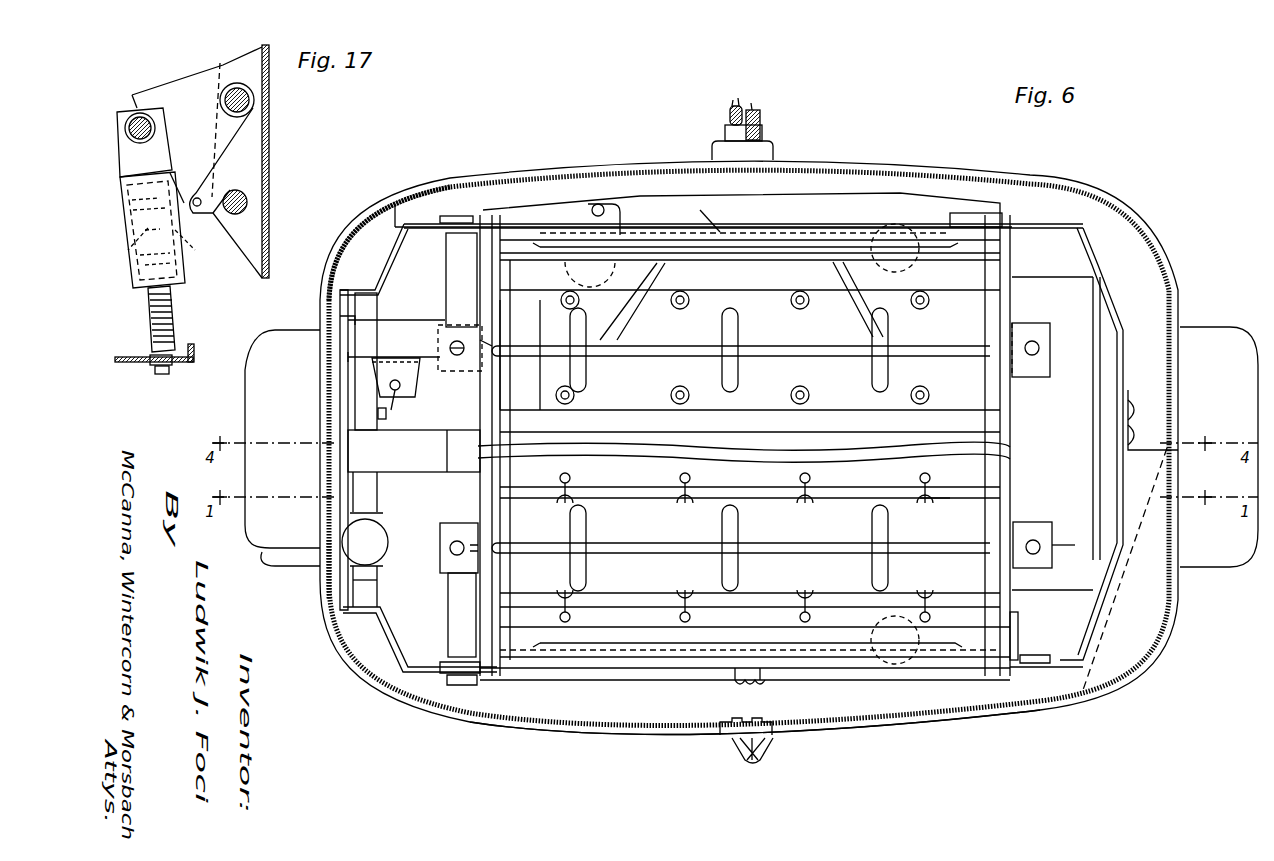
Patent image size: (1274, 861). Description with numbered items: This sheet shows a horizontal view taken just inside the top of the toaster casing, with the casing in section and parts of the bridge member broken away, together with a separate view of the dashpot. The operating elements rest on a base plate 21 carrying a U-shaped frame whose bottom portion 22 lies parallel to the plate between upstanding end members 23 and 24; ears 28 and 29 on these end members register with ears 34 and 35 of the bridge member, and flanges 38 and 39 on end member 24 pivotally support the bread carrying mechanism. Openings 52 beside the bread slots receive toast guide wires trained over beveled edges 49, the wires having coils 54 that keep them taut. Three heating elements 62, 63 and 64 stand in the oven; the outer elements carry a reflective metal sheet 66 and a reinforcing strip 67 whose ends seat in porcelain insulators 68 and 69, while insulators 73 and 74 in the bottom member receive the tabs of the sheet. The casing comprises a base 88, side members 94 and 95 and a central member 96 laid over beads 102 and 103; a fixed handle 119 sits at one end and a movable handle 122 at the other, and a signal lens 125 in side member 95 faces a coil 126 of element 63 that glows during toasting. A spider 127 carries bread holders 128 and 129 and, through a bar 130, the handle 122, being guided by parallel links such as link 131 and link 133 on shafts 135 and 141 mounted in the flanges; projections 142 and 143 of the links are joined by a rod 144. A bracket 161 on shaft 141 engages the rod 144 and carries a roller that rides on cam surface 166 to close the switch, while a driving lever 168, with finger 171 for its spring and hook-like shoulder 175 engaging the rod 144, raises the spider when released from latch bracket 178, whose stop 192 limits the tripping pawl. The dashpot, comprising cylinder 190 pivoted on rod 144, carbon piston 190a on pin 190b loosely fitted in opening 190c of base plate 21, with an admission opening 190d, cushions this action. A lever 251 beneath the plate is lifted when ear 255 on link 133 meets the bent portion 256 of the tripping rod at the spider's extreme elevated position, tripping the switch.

In FIG. 17, the base plate 21 is at (185, 365).
In FIG. 6, the bottom portion 22 is at (739, 210).
In FIG. 6, the end member 23 is at (1056, 433).
In FIG. 17, the end member 24 is at (270, 138).
In FIG. 6, the end member 24 is at (488, 402).
In FIG. 6, the ear 28 is at (1042, 352).
In FIG. 6, the ear 29 is at (457, 340).
In FIG. 6, the ear 34 is at (1038, 522).
In FIG. 6, the ear 35 is at (442, 540).
In FIG. 6, the flange 38 is at (440, 662).
In FIG. 17, the flange 39 is at (231, 187).
In FIG. 6, the flange 39 is at (445, 228).
In FIG. 6, the beveled edge 49 is at (890, 495).
In FIG. 6, the opening 52 is at (918, 478).
In FIG. 6, the coil 54 is at (800, 292).
In FIG. 6, the heating element 62 is at (725, 220).
In FIG. 6, the heating element 63 is at (946, 668).
In FIG. 6, the central heating element 64 is at (720, 433).
In FIG. 6, the heat reflective metal sheet 66 is at (560, 648).
In FIG. 6, the reinforcing metal strip 67 is at (523, 658).
In FIG. 6, the porcelain insulator 68 is at (1018, 640).
In FIG. 6, the porcelain insulator 69 is at (503, 670).
In FIG. 6, the insulator 73 is at (912, 268).
In FIG. 6, the insulator 74 is at (590, 273).
In FIG. 6, the base 88 is at (728, 738).
In FIG. 6, the side member 94 is at (860, 165).
In FIG. 6, the side member 95 is at (868, 722).
In FIG. 6, the central casing member 96 is at (328, 598).
In FIG. 6, the bead 102 is at (335, 268).
In FIG. 6, the bead 103 is at (336, 650).
In FIG. 6, the fixed handle 119 is at (282, 448).
In FIG. 6, the movable handle 122 is at (1219, 447).
In FIG. 6, the signal lens 125 is at (762, 752).
In FIG. 6, the coil 126 is at (752, 682).
In FIG. 6, the spider 127 is at (1172, 317).
In FIG. 6, the bread holder 128 is at (755, 352).
In FIG. 6, the bread holder 129 is at (777, 545).
In FIG. 6, the bar 130 is at (1150, 448).
In FIG. 6, the parallel link 131 is at (1000, 670).
In FIG. 6, the parallel link 133 is at (960, 215).
In FIG. 17, the shaft 135 is at (247, 200).
In FIG. 17, the shaft 141 is at (250, 100).
In FIG. 6, the shaft 141 is at (450, 600).
In FIG. 6, the link projection 142 is at (395, 640).
In FIG. 6, the link projection 143 is at (394, 274).
In FIG. 17, the rod 144 is at (125, 115).
In FIG. 6, the rod 144 is at (380, 588).
In FIG. 6, the bracket 161 is at (401, 480).
In FIG. 17, the cam surface 166 is at (197, 162).
In FIG. 6, the cam surface 166 is at (414, 451).
In FIG. 6, the driving lever 168 is at (416, 395).
In FIG. 6, the finger 171 is at (396, 377).
In FIG. 6, the hook-like shoulder 175 is at (368, 356).
In FIG. 6, the latch bracket 178 is at (418, 313).
In FIG. 17, the cylinder 190 is at (118, 193).
In FIG. 6, the cylinder 190 is at (378, 552).
In FIG. 17, the carbon piston 190a is at (118, 250).
In FIG. 17, the pin 190b is at (158, 308).
In FIG. 17, the opening 190c is at (150, 378).
In FIG. 17, the opening 190d is at (206, 251).
In FIG. 6, the stop 192 is at (386, 414).
In FIG. 6, the lever 251 is at (598, 385).
In FIG. 6, the ear 255 is at (612, 222).
In FIG. 6, the laterally disposed portion 256 is at (596, 203).